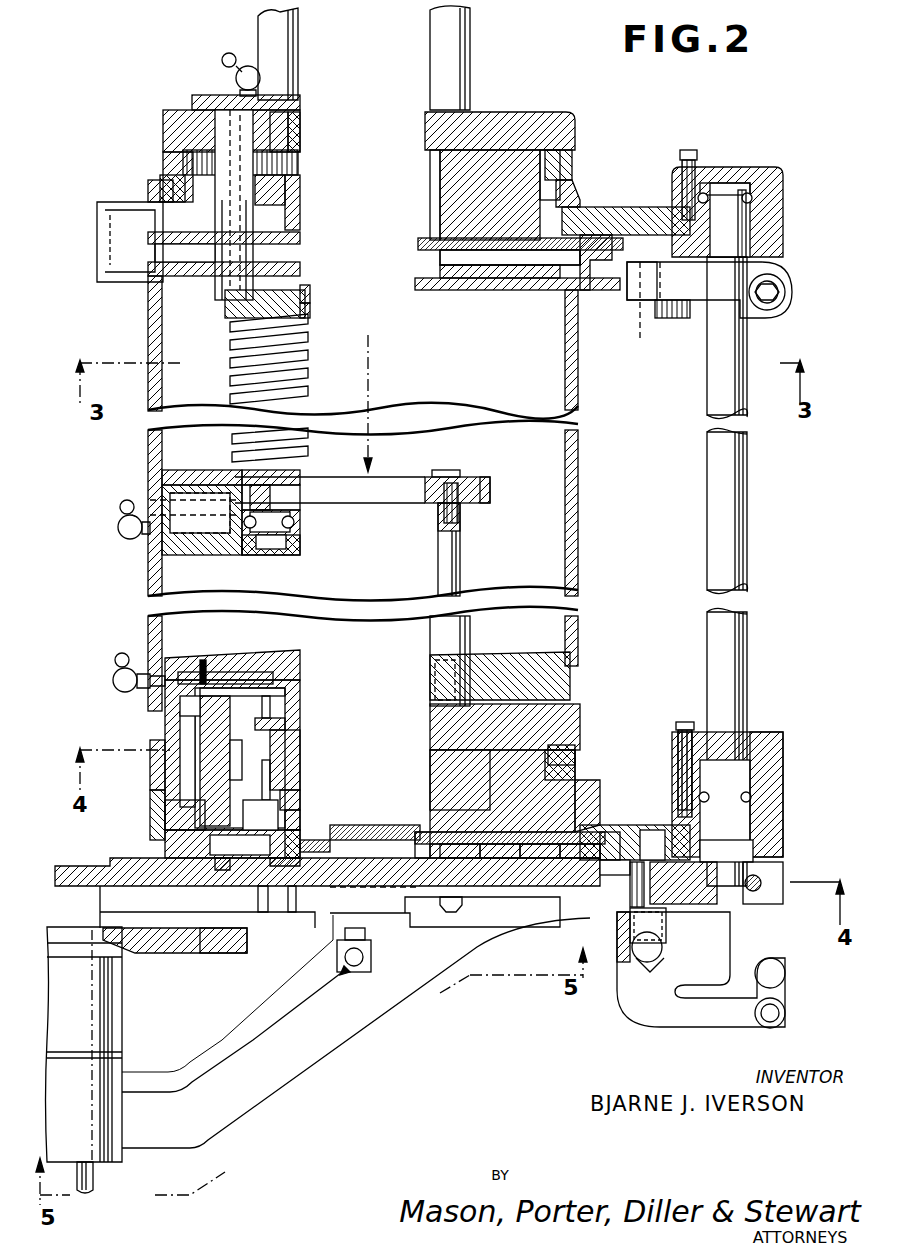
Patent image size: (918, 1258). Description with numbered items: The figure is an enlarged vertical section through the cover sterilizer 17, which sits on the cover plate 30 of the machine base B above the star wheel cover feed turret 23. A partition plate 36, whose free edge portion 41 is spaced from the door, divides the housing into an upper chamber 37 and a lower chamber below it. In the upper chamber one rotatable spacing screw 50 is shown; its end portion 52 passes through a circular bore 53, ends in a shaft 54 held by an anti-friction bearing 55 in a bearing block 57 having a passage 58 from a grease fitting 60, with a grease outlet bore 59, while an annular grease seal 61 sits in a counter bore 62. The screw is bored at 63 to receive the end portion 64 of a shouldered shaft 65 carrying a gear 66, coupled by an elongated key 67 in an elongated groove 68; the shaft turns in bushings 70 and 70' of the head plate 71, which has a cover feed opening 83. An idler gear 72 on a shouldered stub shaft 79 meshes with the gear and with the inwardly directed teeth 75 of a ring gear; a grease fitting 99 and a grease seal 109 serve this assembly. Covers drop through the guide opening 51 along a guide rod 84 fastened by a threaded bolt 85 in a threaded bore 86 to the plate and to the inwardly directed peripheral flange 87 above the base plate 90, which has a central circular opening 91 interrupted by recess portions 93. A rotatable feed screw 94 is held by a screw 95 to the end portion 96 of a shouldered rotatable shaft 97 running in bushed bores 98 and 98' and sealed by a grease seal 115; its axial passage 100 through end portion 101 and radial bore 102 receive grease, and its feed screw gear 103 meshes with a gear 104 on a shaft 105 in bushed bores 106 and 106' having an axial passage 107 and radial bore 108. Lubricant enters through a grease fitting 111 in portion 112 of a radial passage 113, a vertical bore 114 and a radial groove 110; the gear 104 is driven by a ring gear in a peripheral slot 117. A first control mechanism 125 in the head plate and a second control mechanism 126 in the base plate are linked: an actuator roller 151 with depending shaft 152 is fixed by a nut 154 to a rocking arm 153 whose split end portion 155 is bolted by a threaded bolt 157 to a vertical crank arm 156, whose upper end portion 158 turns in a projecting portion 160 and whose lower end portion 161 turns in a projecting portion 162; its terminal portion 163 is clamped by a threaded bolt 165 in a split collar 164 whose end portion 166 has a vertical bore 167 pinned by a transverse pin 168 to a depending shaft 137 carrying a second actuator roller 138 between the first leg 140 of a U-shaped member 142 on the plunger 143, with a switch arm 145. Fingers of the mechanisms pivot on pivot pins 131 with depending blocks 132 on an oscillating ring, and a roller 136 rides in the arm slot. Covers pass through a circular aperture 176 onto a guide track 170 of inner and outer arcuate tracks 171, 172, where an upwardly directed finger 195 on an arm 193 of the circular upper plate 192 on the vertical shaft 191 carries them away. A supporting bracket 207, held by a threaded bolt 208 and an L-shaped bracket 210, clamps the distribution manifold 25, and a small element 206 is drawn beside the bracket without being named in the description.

The cover sterilizer 17 is at (582, 553).
The star wheel cover feed turret 23 is at (210, 954).
The distribution manifold 25 is at (344, 975).
The cover plate 30 is at (95, 860).
The partition plate 36 is at (490, 480).
The upper chamber 37 is at (424, 372).
The free edge portion 41 is at (496, 490).
The rotatable spacing screw 50 is at (310, 352).
The guide opening 51 is at (410, 482).
The end portion 52 is at (300, 520).
The circular bore 53 is at (300, 500).
The shaft 54 is at (300, 548).
The anti-friction bearing 55 is at (256, 542).
The bearing block 57 is at (190, 548).
The passage 58 is at (205, 545).
The grease outlet bore 59 is at (198, 470).
The grease fitting 60 is at (122, 535).
The annular grease seal 61 is at (300, 480).
The counter bore 62 is at (240, 476).
The axial bore 63 is at (310, 317).
The end portion 64 is at (258, 278).
The shouldered shaft 65 is at (285, 195).
The gear 66 is at (298, 162).
The elongated key 67 is at (310, 300).
The elongated groove 68 is at (244, 205).
The bushing 70 is at (316, 202).
The bushing 70' is at (317, 132).
The head plate 71 is at (536, 104).
The idler gear 72 is at (195, 145).
The inwardly directed teeth 75 is at (546, 166).
The shouldered stub shaft 79 is at (170, 186).
The cover feed opening 83 is at (300, 140).
The guide rod 84 is at (458, 574).
The threaded bolt 85 is at (448, 470).
The threaded bore 86 is at (460, 522).
The inwardly directed peripheral flange 87 is at (482, 668).
The base plate 90 is at (578, 734).
The central circular opening 91 is at (432, 774).
The recess portion 93 is at (432, 722).
The rotatable feed screw 94 is at (302, 846).
The screw 95 is at (288, 868).
The end portion 96 is at (226, 874).
The shouldered rotatable shaft 97 is at (270, 822).
The bushed bore 98 is at (307, 783).
The bushed bore 98' is at (302, 706).
The grease fitting 99 is at (250, 66).
The axial passage 100 is at (300, 724).
The end portion 101 is at (300, 690).
The radial bore 102 is at (290, 790).
The feed screw gear 103 is at (300, 754).
The gear 104 is at (165, 752).
The shaft 105 is at (165, 848).
The bushed bore 106 is at (154, 818).
The bushed bore 106' is at (155, 715).
The axial passage 107 is at (208, 716).
The radial bore 108 is at (225, 770).
The grease seal 109 is at (300, 236).
The radial groove 110 is at (300, 672).
The grease fitting 111 is at (112, 676).
The portion 112 is at (188, 672).
The radial passage 113 is at (220, 672).
The vertical bore 114 is at (258, 672).
The grease seal 115 is at (300, 828).
The peripheral slot 117 is at (556, 784).
The first control mechanism 125 is at (462, 280).
The second control mechanism 126 is at (418, 840).
The pivot pin 131 is at (490, 862).
The depending block 132 is at (526, 862).
The actuator roller 136 is at (648, 838).
The depending shaft 137 is at (666, 930).
The second actuator roller 138 is at (662, 950).
The first leg 140 is at (734, 944).
The U-shaped member 142 is at (630, 992).
The plunger 143 is at (666, 972).
The switch arm 145 is at (770, 1030).
The actuator roller 151 is at (660, 215).
The depending shaft 152 is at (648, 311).
The rocking arm 153 is at (684, 300).
The nut 154 is at (640, 300).
The split end portion 155 is at (770, 262).
The vertical crank arm 156 is at (746, 494).
The threaded bolt 157 is at (786, 294).
The upper end portion 158 is at (748, 232).
The projecting portion 160 is at (790, 186).
The lower end portion 161 is at (738, 752).
The projecting portion 162 is at (784, 784).
The terminal portion 163 is at (754, 846).
The split collar 164 is at (780, 904).
The threaded bolt 165 is at (762, 884).
The end portion 166 is at (634, 900).
The vertical bore 167 is at (680, 878).
The transverse pin 168 is at (617, 865).
The guide track 170 is at (292, 914).
The inner arcuate track 171 is at (270, 912).
The outer arcuate track 172 is at (466, 862).
The circular aperture 176 is at (376, 880).
The vertical shaft 191 is at (100, 1192).
The circular upper plate 192 is at (178, 954).
The arm 193 is at (148, 912).
The upwardly directed finger 195 is at (328, 850).
The bearing 206 is at (366, 960).
The supporting bracket 207 is at (392, 938).
The threaded bolt 208 is at (440, 914).
The L-shaped bracket 210 is at (322, 950).
The machine base B is at (300, 1075).